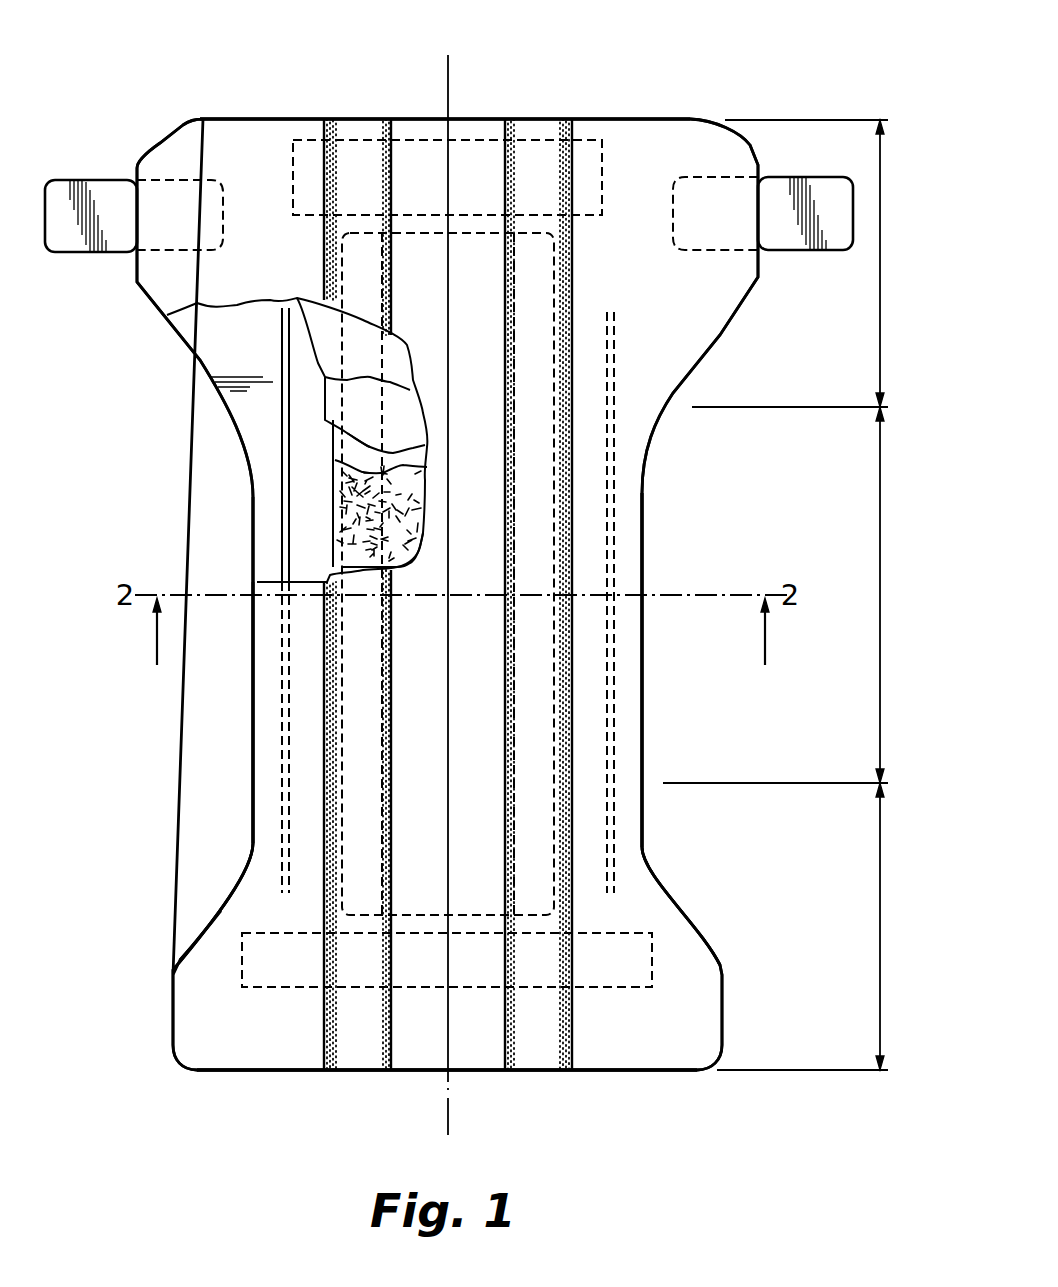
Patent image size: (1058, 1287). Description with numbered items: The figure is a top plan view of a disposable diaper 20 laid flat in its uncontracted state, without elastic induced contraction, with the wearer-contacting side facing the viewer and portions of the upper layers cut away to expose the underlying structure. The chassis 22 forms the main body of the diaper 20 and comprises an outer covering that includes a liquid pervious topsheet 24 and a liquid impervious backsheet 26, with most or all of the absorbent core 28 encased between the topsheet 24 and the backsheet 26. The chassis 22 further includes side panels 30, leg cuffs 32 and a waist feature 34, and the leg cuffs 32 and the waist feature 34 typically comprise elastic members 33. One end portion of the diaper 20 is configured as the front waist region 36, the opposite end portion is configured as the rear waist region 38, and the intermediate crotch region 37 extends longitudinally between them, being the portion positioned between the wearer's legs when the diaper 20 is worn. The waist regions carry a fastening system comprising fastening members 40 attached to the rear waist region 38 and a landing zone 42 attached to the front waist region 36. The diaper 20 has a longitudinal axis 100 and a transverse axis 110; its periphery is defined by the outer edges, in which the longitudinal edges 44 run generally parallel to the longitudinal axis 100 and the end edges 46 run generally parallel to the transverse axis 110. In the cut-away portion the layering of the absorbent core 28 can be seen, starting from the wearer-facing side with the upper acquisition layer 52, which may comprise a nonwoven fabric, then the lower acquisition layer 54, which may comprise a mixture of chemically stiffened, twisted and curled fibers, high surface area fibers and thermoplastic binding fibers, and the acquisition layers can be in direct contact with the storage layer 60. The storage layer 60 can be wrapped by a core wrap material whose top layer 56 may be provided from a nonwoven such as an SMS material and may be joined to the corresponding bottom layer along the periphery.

The diaper 20 is at (753, 88).
The chassis 22 is at (487, 728).
The topsheet 24 is at (410, 735).
The backsheet 26 is at (214, 345).
The absorbent core 28 is at (330, 482).
The side panels 30 is at (230, 182).
The leg cuffs 32 is at (324, 690).
The elastic members 33 is at (342, 275).
The waist feature 34 is at (483, 165).
The front waist region 36 is at (819, 926).
The crotch region 37 is at (792, 595).
The rear waist region 38 is at (806, 263).
The fastening members 40 is at (110, 190).
The landing zone 42 is at (303, 963).
The longitudinal edges 44 is at (253, 818).
The end edges 46 is at (343, 119).
The upper acquisition layer 52 is at (393, 352).
The lower acquisition layer 54 is at (413, 422).
The top layer 56 is at (348, 443).
The storage layer 60 is at (385, 535).
The longitudinal axis 100 is at (448, 1118).
The transverse axis 110 is at (700, 595).